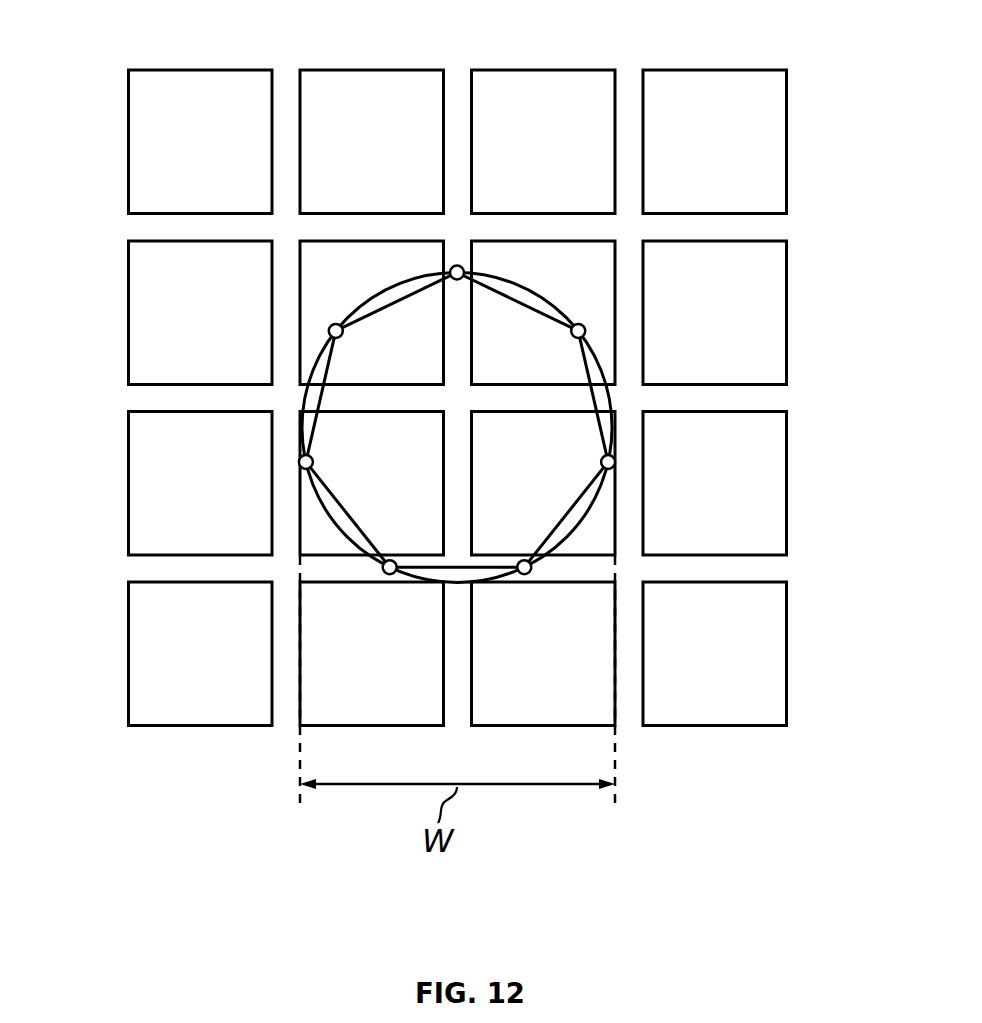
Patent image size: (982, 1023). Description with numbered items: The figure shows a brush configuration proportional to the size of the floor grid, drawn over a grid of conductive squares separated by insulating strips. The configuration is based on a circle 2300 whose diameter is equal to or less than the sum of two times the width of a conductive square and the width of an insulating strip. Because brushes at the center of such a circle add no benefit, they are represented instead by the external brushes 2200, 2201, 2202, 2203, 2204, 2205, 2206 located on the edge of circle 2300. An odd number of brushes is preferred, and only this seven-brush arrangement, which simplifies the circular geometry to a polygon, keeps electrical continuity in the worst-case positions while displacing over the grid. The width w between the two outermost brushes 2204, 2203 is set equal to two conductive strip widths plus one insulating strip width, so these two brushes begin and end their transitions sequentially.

The external brush 2200 is at (457, 272).
The external brush 2201 is at (578, 331).
The external brush 2202 is at (608, 462).
The external brush 2203 is at (524, 567).
The external brush 2204 is at (390, 567).
The external brush 2205 is at (306, 462).
The external brush 2206 is at (336, 331).
The circle 2300 is at (614, 397).